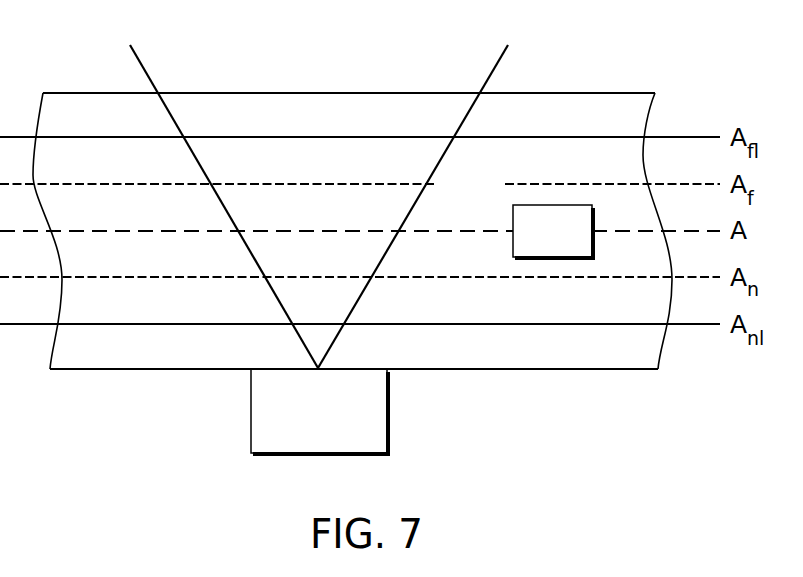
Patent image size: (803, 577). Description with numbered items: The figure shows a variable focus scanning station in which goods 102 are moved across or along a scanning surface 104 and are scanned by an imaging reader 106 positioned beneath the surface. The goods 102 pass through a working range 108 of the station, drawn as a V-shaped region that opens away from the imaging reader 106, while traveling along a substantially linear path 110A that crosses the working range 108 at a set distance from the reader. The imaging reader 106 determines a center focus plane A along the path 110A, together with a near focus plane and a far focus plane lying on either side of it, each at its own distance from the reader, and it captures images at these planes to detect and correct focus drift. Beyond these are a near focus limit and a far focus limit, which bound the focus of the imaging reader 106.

The goods 102 is at (577, 244).
The scanning surface 104 is at (573, 107).
The imaging reader 106 is at (251, 411).
The working range 108 is at (356, 76).
The substantially linear path 110A is at (478, 229).